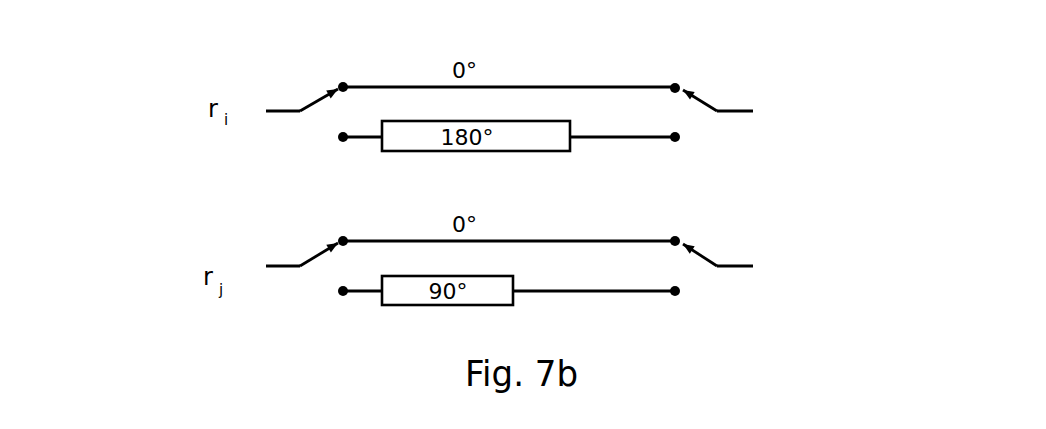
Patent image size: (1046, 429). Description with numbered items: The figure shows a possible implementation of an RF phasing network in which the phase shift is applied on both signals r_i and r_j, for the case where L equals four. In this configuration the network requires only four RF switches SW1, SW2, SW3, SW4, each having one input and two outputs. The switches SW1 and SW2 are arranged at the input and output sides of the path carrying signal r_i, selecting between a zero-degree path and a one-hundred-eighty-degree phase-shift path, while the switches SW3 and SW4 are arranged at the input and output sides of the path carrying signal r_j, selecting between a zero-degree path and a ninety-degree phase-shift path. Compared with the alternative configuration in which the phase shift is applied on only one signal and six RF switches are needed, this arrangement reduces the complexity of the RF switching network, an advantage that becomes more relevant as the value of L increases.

The RF switch SW1 is at (324, 128).
The RF switch SW2 is at (697, 128).
The RF switch SW3 is at (324, 282).
The RF switch SW4 is at (697, 282).